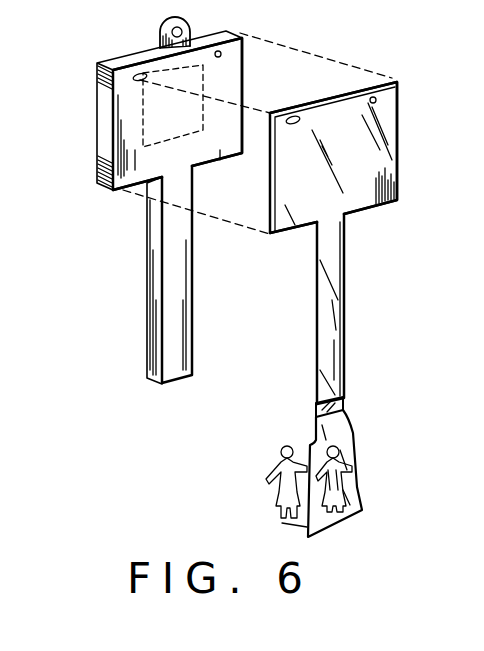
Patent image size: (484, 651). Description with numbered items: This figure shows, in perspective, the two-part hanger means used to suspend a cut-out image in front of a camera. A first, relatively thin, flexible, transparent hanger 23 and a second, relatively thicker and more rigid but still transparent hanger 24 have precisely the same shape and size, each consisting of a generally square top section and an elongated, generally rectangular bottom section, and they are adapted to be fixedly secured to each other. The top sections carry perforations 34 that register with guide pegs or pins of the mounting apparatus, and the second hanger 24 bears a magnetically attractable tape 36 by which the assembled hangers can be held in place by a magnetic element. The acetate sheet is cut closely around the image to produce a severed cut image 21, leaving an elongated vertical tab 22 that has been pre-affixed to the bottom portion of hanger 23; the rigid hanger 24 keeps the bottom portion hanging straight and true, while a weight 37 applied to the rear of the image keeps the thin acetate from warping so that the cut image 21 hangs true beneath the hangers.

The cut image 21 is at (357, 462).
The elongated vertical tab 22 is at (340, 404).
The first transparent hanger 23 is at (404, 145).
The second transparent hanger 24 is at (96, 171).
The perforations 34 is at (140, 73).
The magnetically attractable tape 36 is at (140, 108).
The weight 37 is at (278, 464).